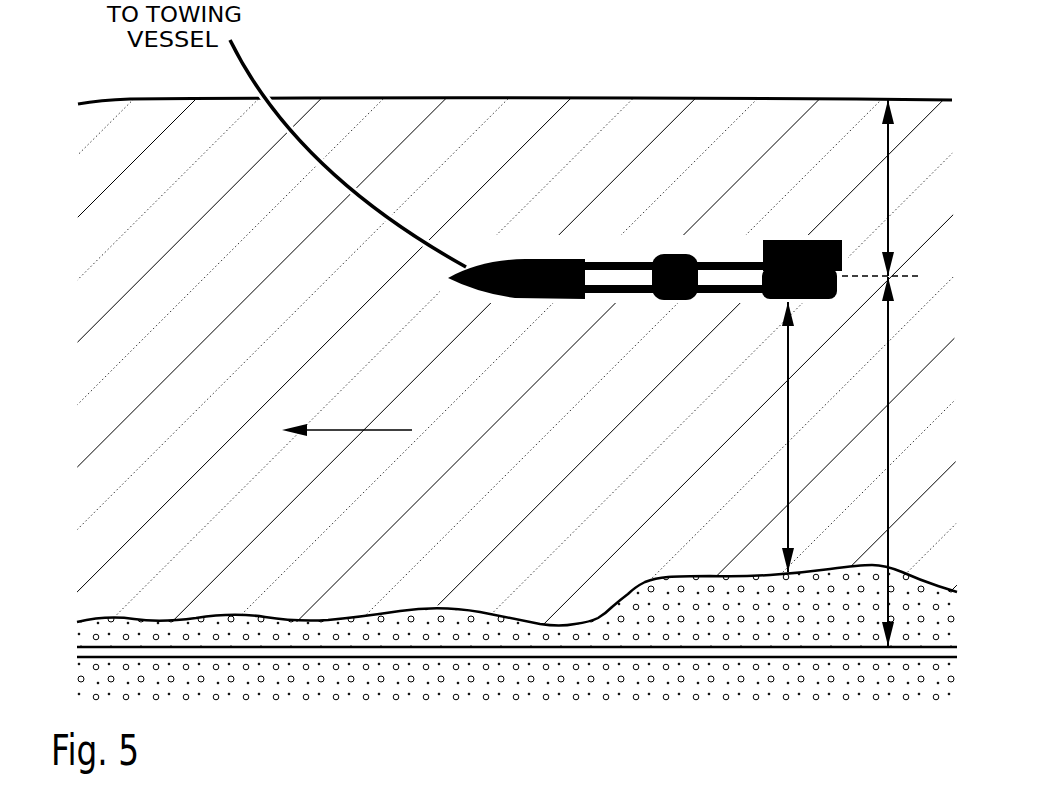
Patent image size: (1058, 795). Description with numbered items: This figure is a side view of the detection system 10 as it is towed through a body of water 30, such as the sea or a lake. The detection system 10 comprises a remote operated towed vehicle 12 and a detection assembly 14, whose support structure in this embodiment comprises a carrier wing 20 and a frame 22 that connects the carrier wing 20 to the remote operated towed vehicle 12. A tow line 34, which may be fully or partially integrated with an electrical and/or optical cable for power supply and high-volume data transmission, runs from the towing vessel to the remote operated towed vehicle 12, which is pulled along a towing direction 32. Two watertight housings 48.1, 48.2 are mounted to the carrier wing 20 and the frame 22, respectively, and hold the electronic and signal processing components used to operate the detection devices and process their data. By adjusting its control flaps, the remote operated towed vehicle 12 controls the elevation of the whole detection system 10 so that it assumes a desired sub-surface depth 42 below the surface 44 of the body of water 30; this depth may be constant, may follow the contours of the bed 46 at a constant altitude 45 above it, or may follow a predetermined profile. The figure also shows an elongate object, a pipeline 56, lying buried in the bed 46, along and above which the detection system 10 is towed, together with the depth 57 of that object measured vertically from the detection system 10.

The detection system 10 is at (683, 235).
The remote operated towed vehicle 12 is at (509, 257).
The detection assembly 14 is at (828, 252).
The carrier wing 20 is at (838, 296).
The frame 22 is at (740, 295).
The body of water 30 is at (313, 521).
The towing direction 32 is at (363, 429).
The tow line 34 is at (365, 203).
The sub-surface depth 42 is at (890, 165).
The surface 44 is at (596, 97).
The altitude 45 is at (786, 495).
The bed 46 is at (693, 577).
The watertight housing 48.1 is at (792, 240).
The watertight housing 48.2 is at (665, 303).
The pipeline 56 is at (77, 648).
The depth 57 is at (886, 398).